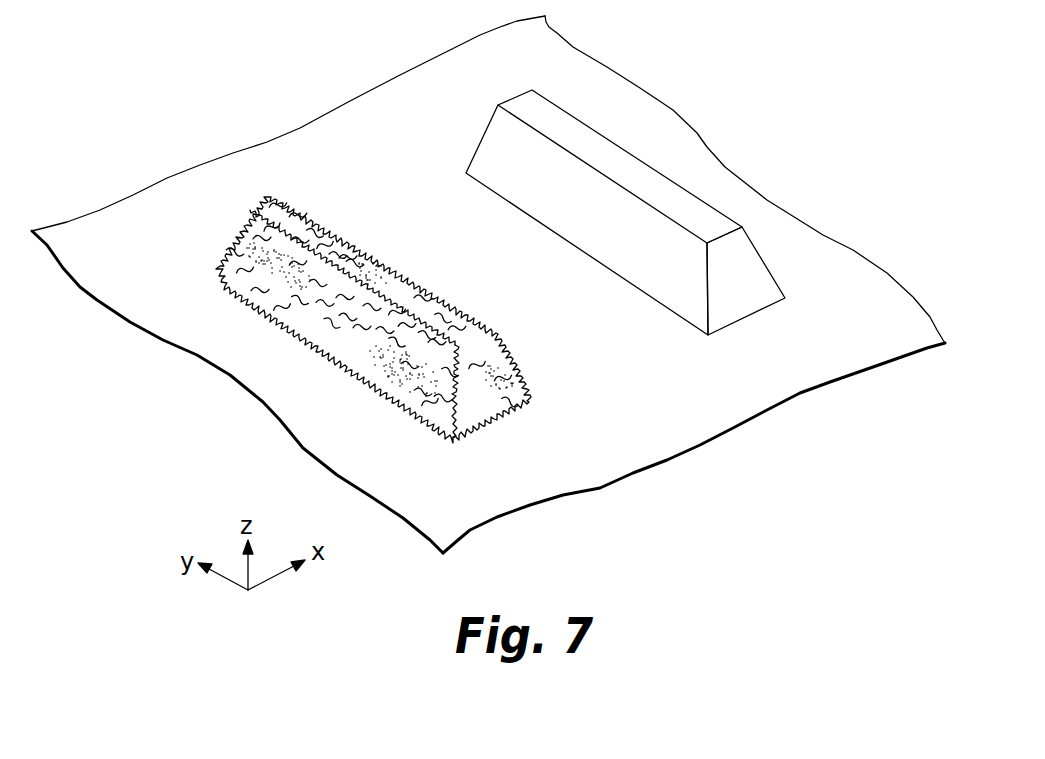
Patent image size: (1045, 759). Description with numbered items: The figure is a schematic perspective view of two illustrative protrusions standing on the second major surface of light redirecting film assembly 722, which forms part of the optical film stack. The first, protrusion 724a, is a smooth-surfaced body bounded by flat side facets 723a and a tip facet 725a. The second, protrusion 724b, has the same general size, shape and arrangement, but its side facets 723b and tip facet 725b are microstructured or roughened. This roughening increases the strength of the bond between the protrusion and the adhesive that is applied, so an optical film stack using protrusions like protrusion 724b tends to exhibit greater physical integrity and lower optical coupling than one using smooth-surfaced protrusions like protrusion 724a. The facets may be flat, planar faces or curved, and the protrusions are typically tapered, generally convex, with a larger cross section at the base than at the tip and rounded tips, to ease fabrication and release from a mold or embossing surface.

The second major surface of light redirecting film assembly 722 is at (608, 90).
The tip facet 725a is at (692, 213).
The side facet 723a is at (743, 272).
The protrusion 724a is at (752, 318).
The tip facet 725b is at (292, 213).
The side facet 723b is at (518, 412).
The protrusion 724b is at (480, 392).